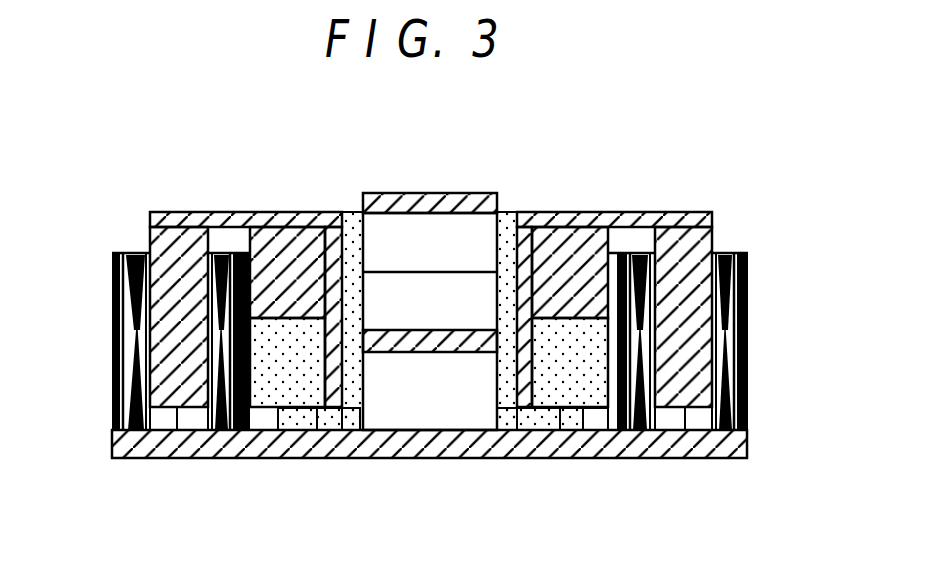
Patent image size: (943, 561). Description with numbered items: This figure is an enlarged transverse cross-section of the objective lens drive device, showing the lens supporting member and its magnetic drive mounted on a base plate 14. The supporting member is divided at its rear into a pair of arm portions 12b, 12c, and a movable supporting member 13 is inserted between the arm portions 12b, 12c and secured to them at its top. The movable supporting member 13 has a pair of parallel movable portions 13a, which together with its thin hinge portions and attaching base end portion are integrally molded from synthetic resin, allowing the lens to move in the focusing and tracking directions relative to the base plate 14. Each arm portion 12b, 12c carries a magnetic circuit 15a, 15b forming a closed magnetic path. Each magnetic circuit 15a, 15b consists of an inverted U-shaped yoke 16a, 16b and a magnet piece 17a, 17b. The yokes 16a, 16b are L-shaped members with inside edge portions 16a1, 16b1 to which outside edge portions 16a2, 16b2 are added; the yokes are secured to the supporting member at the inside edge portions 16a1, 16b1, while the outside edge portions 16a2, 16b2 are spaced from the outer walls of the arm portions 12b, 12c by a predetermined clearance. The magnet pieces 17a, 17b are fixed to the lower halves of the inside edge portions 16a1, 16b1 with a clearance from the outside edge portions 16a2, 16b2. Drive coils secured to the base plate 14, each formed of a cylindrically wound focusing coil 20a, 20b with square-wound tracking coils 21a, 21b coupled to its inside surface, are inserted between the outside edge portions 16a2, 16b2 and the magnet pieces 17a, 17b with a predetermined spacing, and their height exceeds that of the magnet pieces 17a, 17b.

The arm portion 12b is at (589, 218).
The arm portion 12c is at (292, 227).
The movable supporting member 13 is at (474, 193).
The movable portion 13a is at (408, 330).
The base plate 14 is at (127, 446).
The magnetic circuit 15a is at (675, 335).
The magnetic circuit 15b is at (226, 334).
The yoke 16a is at (656, 213).
The inside edge portion 16a1 is at (525, 225).
The outside edge portion 16a2 is at (700, 250).
The yoke 16b is at (200, 212).
The inside edge portion 16b1 is at (350, 377).
The outside edge portion 16b2 is at (148, 246).
The magnet piece 17a is at (564, 398).
The magnet piece 17b is at (315, 403).
The focusing coil 20a is at (744, 362).
The focusing coil 20b is at (112, 333).
The tracking coil 21a is at (632, 315).
The tracking coil 21b is at (232, 386).